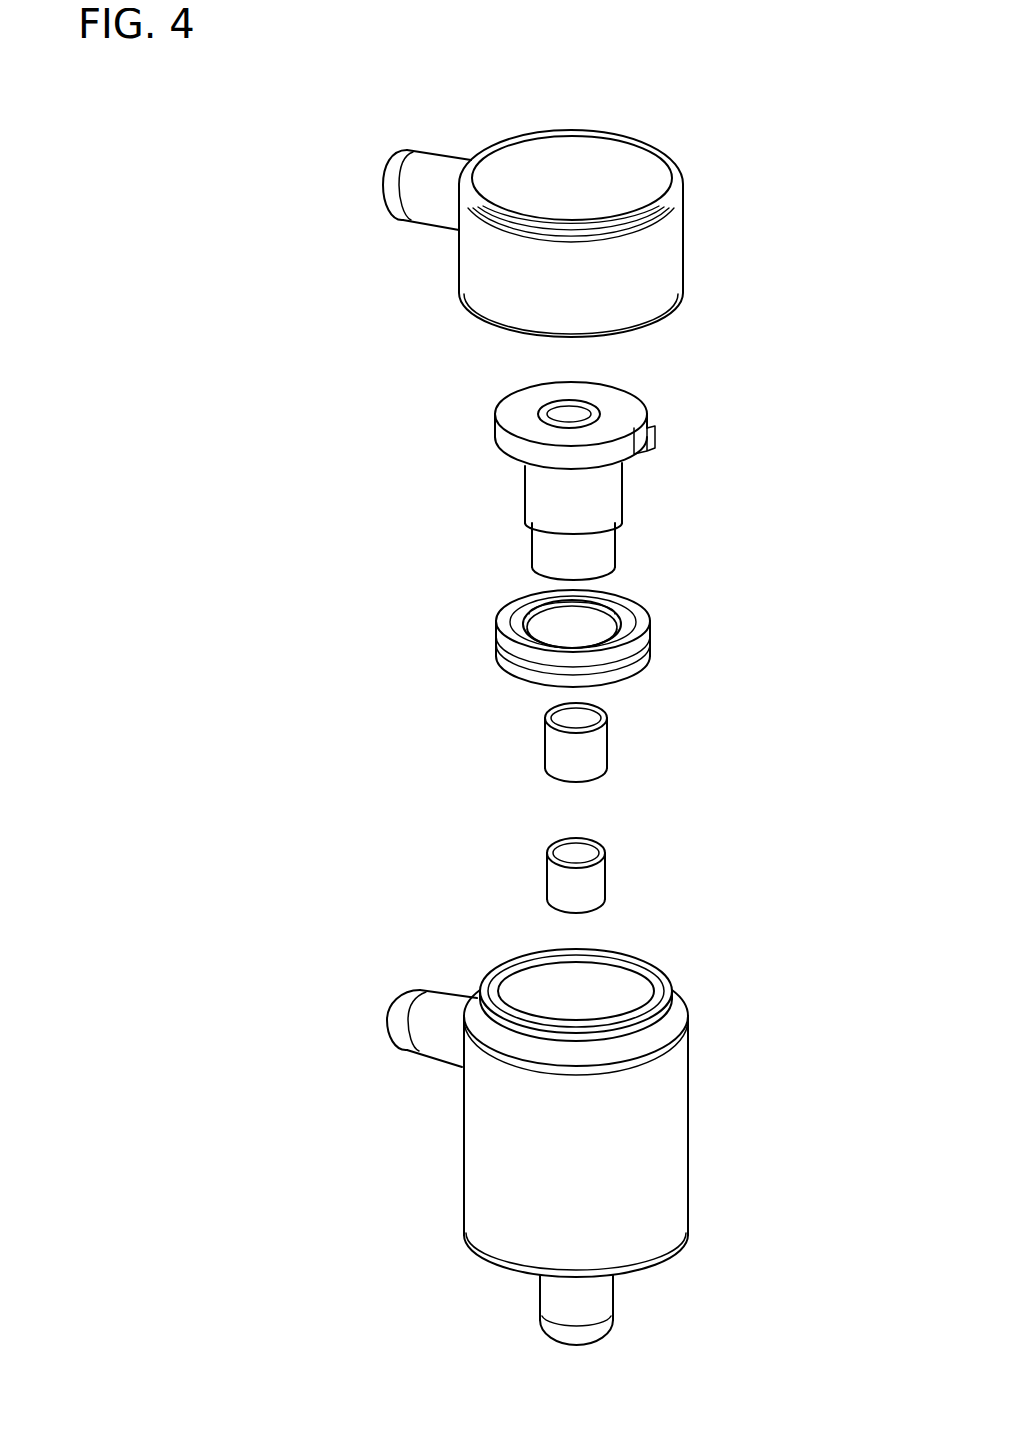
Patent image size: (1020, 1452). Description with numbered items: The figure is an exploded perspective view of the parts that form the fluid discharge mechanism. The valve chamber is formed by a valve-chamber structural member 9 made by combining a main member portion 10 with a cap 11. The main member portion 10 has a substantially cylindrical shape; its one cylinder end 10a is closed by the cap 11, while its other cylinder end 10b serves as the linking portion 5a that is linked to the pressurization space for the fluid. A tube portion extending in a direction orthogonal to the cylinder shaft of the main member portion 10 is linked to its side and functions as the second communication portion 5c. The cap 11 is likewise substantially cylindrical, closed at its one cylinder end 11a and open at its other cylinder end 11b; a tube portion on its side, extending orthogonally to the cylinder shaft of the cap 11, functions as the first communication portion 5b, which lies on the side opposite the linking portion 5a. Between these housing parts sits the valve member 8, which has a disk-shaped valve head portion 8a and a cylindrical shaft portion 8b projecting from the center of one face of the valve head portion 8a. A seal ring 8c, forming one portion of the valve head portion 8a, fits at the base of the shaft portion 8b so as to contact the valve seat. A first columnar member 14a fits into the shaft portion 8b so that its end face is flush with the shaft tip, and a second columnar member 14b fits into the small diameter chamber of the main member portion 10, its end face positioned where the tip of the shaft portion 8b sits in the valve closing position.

The valve-chamber structural member 9 is at (727, 95).
The cap 11 is at (582, 204).
The one cylinder end of the cap 11a is at (582, 152).
The other cylinder end of the cap 11b is at (640, 315).
The first communication portion 5b is at (425, 159).
The valve member 8 is at (630, 478).
The valve head portion 8a is at (571, 414).
The shaft portion 8b is at (587, 505).
The seal ring 8c is at (642, 629).
The first columnar member 14a is at (587, 745).
The second columnar member 14b is at (585, 877).
The main member portion 10 is at (556, 1154).
The one cylinder end of the main member portion 10a is at (624, 979).
The other cylinder end of the main member portion 10b is at (584, 1335).
The second communication portion 5c is at (424, 1032).
The linking portion 5a is at (592, 1299).